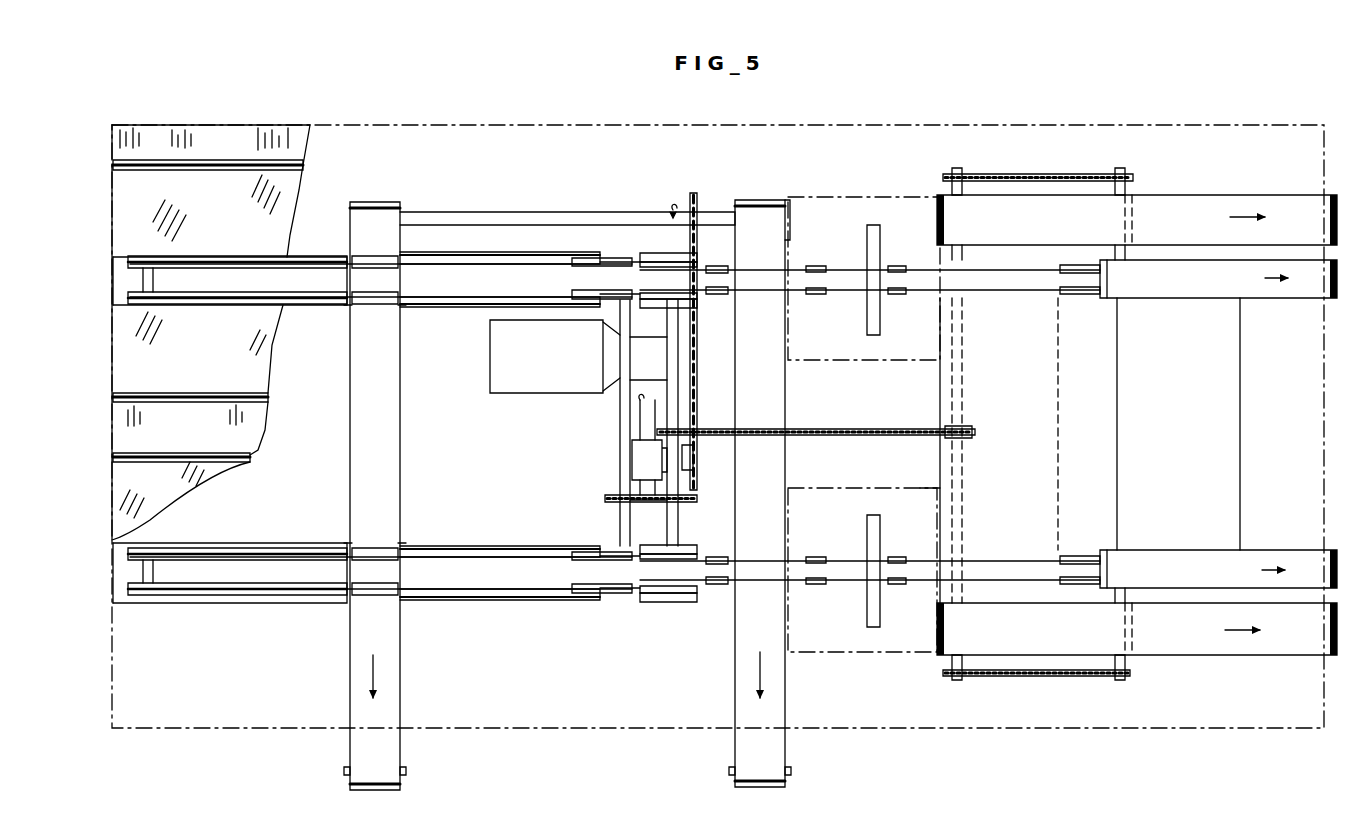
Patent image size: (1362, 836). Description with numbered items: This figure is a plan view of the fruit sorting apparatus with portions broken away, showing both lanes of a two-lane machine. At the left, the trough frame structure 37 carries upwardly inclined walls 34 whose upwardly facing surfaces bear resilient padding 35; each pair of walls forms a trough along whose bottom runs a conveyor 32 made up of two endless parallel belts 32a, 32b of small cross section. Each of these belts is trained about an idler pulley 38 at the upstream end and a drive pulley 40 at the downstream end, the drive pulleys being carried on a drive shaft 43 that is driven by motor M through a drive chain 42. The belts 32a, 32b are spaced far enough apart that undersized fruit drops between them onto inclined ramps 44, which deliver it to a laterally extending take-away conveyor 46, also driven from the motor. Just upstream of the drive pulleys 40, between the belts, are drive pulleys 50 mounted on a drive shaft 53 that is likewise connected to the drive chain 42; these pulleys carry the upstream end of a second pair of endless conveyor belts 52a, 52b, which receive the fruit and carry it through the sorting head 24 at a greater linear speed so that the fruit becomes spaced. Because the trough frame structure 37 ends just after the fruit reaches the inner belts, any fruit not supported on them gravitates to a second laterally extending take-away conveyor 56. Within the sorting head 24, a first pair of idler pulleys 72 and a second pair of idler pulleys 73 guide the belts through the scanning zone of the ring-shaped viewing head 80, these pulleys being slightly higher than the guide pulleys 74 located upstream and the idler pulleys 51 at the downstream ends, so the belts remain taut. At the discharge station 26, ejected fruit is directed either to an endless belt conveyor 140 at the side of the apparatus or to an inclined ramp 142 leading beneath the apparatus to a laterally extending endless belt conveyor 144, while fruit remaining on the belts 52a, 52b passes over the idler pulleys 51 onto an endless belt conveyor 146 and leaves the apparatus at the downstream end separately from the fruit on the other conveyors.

The sorting head 24 is at (826, 193).
The discharge station 26 is at (1148, 192).
The conveyor 32 is at (462, 260).
The endless belt 32a is at (222, 305).
The endless belt 32b is at (222, 258).
The inclined wall 34 is at (305, 170).
The resilient padding 35 is at (200, 346).
The trough frame structure 37 is at (262, 128).
The idler pulley 38 is at (165, 292).
The drive pulley 40 is at (692, 290).
The drive chain 42 is at (606, 497).
The drive shaft 43 is at (690, 412).
The inclined ramp 44 is at (403, 308).
The take-away conveyor 46 is at (403, 411).
The drive pulley 50 is at (600, 287).
The idler pulley 51 is at (1080, 292).
The endless conveyor belt 52a is at (856, 298).
The endless conveyor belt 52b is at (856, 268).
The drive shaft 53 is at (618, 415).
The take-away conveyor 56 is at (787, 394).
The idler pulley 72 is at (812, 280).
The idler pulley 73 is at (896, 268).
The guide pulley 74 is at (724, 290).
The viewing head 80 is at (873, 222).
The endless belt conveyor 140 is at (1137, 425).
The inclined ramp 142 is at (989, 450).
The endless belt conveyor 144 is at (1178, 424).
The endless belt conveyor 146 is at (1144, 424).